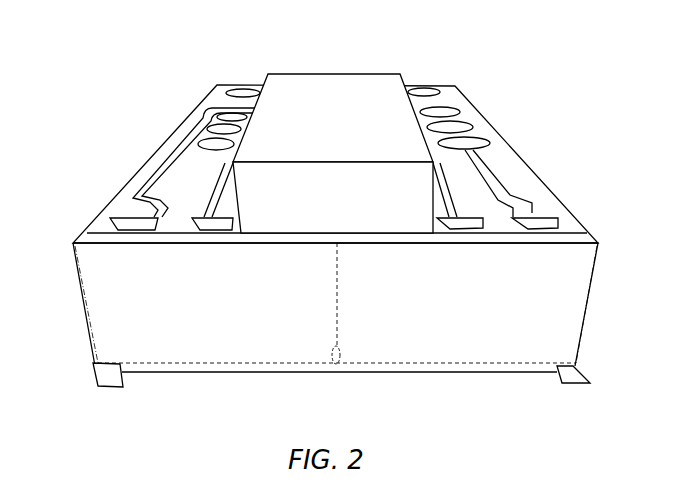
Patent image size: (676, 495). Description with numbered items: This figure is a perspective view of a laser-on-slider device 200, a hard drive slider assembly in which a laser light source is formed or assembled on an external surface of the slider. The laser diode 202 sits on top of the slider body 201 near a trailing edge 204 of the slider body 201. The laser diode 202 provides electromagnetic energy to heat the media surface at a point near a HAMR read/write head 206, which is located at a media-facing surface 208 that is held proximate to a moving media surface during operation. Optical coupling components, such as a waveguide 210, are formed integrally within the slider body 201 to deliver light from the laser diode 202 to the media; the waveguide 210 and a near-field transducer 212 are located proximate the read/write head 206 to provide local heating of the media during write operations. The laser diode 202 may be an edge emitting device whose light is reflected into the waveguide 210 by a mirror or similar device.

The laser-on-slider device 200 is at (466, 46).
The slider body 201 is at (98, 211).
The laser diode 202 is at (283, 74).
The trailing edge 204 is at (112, 387).
The HAMR read/write head 206 is at (338, 364).
The media-facing surface 208 is at (588, 384).
The waveguide 210 is at (338, 293).
The near-field transducer 212 is at (335, 366).